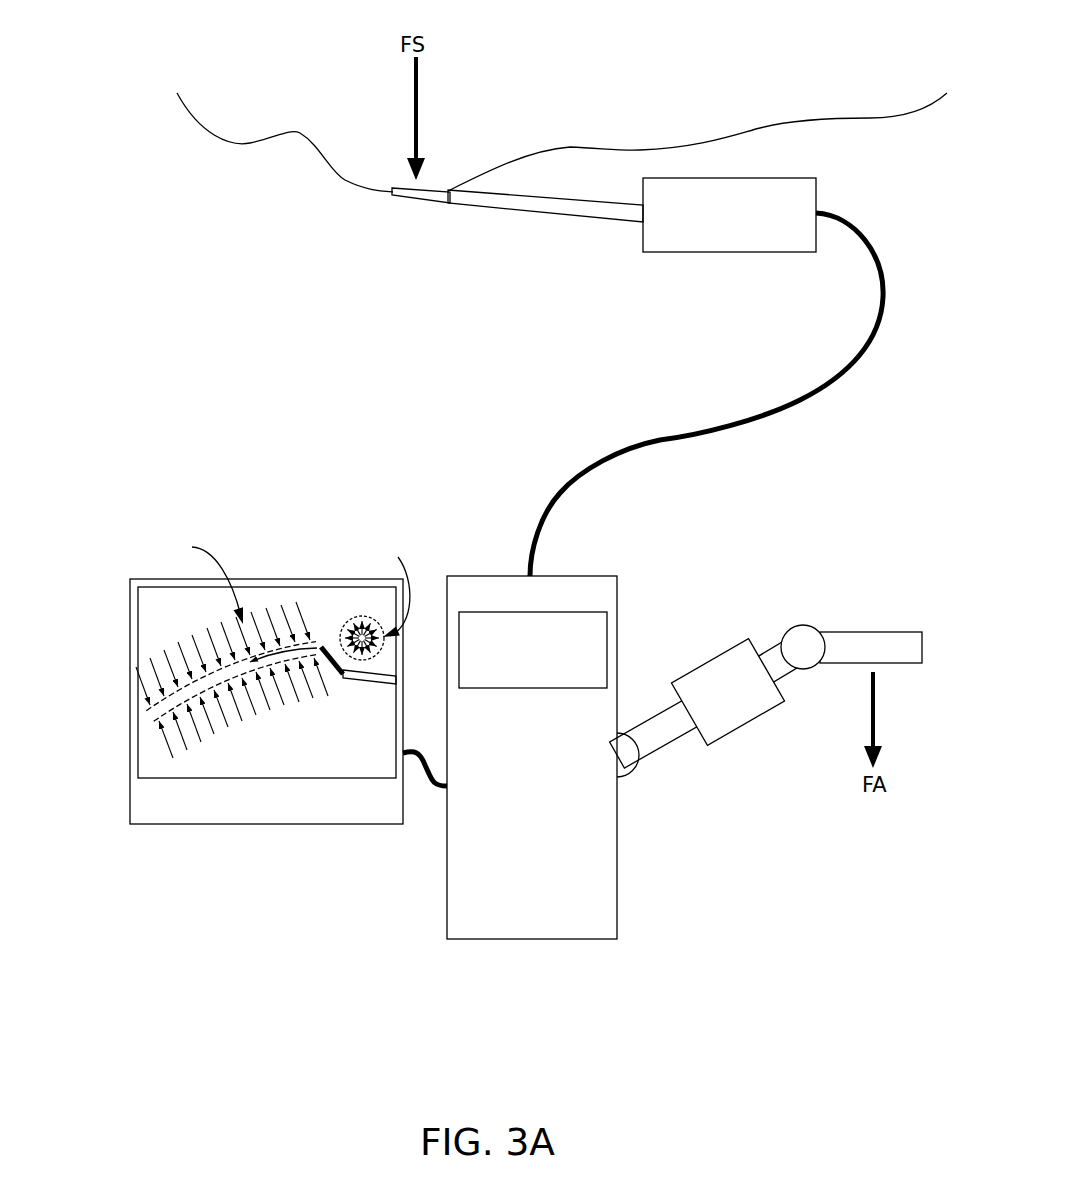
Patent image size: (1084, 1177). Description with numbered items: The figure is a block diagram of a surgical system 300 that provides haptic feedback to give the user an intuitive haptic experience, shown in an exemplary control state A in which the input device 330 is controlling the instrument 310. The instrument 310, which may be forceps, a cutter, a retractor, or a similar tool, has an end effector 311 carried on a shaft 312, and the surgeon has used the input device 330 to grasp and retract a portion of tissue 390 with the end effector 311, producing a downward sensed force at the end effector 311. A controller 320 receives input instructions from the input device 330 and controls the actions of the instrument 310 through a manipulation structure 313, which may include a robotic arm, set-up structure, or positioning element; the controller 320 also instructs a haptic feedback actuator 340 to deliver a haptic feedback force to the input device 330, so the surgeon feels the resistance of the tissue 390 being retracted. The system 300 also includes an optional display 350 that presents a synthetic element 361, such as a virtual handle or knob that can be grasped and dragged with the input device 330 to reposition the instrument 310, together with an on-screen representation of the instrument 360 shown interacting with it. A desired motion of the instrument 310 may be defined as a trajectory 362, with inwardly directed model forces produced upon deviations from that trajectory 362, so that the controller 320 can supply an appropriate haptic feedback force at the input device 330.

The surgical system 300 is at (201, 896).
The instrument 310 is at (535, 289).
The end effector 311 is at (425, 200).
The shaft 312 is at (555, 215).
The manipulation structure 313 is at (700, 252).
The controller 320 is at (606, 850).
The input device 330 is at (866, 630).
The haptic feedback actuator 340 is at (786, 631).
The display 350 is at (226, 708).
The displayed probe representation 360 is at (360, 680).
The synthetic element 361 is at (360, 618).
The trajectory 362 is at (156, 700).
The tissue 390 is at (672, 74).